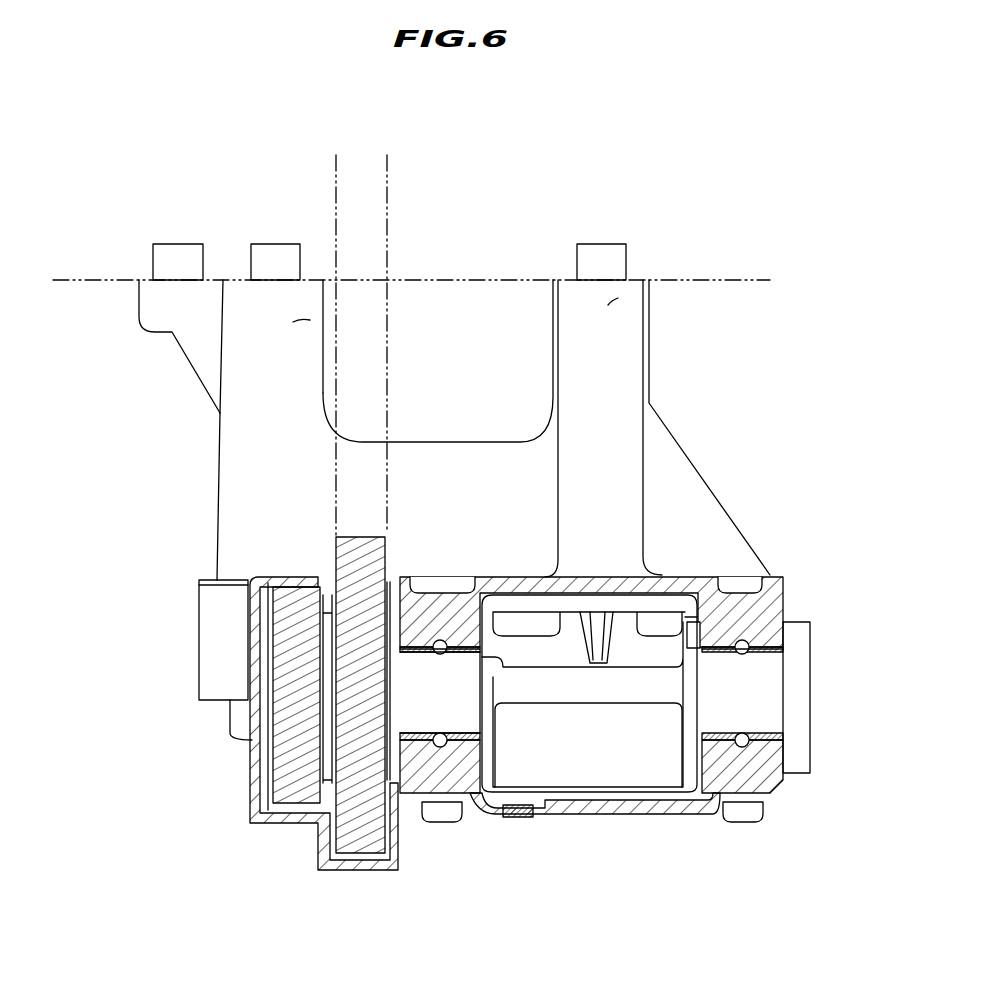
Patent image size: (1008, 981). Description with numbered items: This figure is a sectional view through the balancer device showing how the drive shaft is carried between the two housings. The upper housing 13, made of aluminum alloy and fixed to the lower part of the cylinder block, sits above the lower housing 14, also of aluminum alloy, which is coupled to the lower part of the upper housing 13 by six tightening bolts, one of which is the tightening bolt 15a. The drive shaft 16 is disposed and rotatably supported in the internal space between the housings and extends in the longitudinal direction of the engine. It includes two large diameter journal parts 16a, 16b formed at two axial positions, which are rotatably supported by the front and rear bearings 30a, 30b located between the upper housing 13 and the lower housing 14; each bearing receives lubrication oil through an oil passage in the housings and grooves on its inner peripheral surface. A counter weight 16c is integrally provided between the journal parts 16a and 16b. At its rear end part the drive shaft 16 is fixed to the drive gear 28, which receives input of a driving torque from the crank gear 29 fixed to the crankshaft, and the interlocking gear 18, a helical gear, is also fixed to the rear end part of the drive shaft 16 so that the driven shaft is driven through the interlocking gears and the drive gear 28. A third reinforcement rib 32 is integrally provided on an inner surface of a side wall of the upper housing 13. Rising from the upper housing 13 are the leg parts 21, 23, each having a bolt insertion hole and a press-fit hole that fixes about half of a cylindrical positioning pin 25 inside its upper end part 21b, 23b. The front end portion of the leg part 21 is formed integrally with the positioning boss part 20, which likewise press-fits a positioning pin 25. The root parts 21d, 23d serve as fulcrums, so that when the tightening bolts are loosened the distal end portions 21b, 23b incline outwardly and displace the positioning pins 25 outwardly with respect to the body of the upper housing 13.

The upper housing 13 is at (662, 583).
The lower housing 14 is at (572, 802).
The tightening bolt 15a is at (442, 822).
The drive shaft 16 is at (722, 641).
The large diameter journal part 16a is at (757, 708).
The large diameter journal part 16b is at (457, 703).
The counter weight 16c is at (640, 740).
The interlocking gear 18 is at (290, 768).
The positioning boss part 20 is at (165, 312).
The leg part 21 is at (245, 450).
The upper end part 21b is at (293, 323).
The root part 21d is at (245, 532).
The leg part 23 is at (622, 327).
The upper end part 23b is at (608, 305).
The root part 23d is at (608, 517).
The cylindrical positioning pin 25 is at (178, 257).
The drive gear 28 is at (355, 807).
The crank gear 29 is at (365, 385).
The front bearing 30a is at (770, 632).
The rear bearing 30b is at (462, 645).
The third reinforcement rib 32 is at (597, 642).